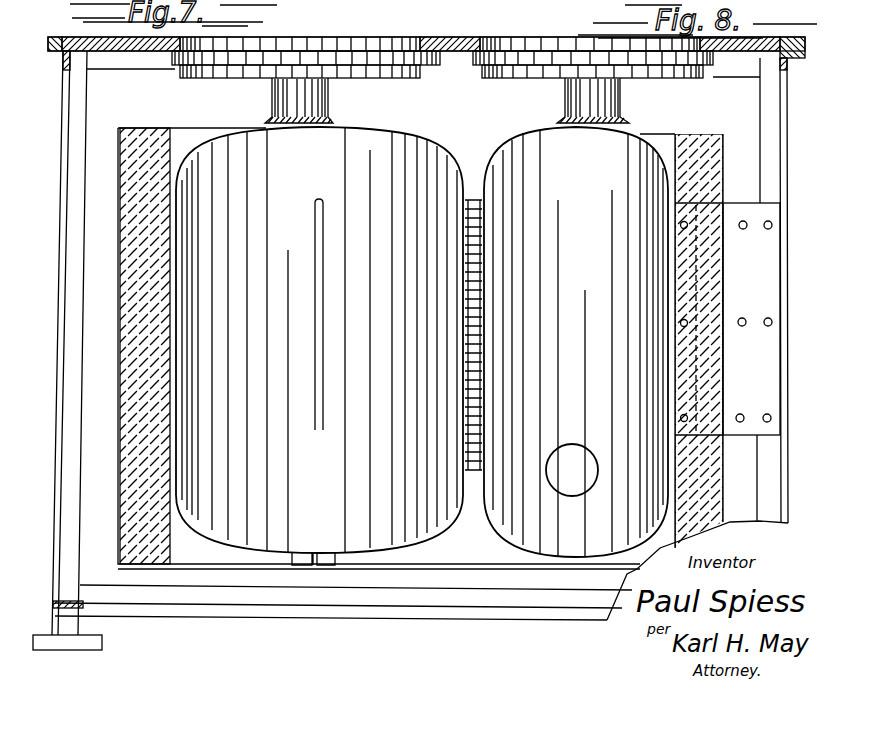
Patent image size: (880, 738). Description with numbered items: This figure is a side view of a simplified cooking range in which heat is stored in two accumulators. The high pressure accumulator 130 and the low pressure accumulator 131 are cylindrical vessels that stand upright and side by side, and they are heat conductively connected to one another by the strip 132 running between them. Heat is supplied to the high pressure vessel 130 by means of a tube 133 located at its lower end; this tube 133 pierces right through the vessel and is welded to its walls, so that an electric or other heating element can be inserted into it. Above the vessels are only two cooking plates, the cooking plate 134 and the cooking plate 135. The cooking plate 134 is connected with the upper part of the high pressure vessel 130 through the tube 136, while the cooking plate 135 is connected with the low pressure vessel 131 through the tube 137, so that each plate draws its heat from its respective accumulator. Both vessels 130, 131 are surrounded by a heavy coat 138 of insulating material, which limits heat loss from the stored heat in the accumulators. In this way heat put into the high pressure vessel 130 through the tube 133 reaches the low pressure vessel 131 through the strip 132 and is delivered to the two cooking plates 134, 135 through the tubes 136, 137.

The high pressure accumulator 130 is at (576, 342).
The low pressure accumulator 131 is at (319, 346).
The strip 132 is at (471, 302).
The tube 133 is at (572, 470).
The cooking plate 134 is at (514, 60).
The cooking plate 135 is at (316, 48).
The tube 136 is at (613, 100).
The tube 137 is at (329, 95).
The coat of insulating material 138 is at (156, 128).